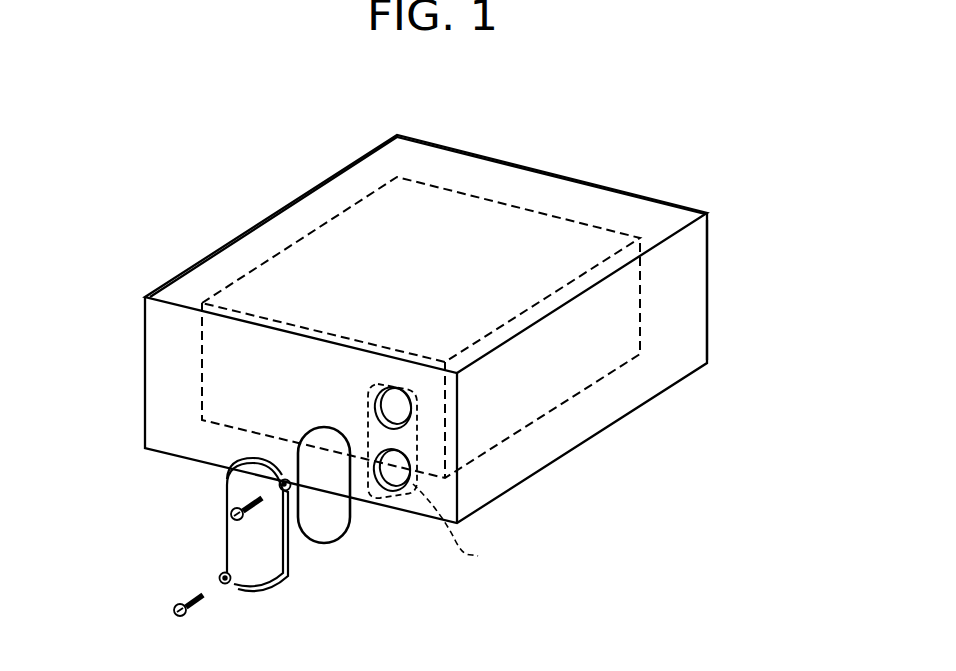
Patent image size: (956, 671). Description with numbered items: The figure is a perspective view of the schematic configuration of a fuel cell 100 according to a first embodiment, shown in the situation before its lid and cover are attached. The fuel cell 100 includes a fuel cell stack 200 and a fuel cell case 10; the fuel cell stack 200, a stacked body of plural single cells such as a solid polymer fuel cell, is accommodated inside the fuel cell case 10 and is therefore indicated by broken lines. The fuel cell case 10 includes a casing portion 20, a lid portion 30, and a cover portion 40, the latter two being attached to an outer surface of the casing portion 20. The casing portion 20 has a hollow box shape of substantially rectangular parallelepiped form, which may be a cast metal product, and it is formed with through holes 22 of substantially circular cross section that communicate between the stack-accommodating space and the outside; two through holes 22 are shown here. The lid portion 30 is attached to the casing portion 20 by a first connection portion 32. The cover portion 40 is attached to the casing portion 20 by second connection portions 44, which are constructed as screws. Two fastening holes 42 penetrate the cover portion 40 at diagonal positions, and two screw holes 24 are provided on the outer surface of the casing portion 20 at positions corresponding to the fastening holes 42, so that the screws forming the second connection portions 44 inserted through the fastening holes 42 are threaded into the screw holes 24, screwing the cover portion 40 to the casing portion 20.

The fuel cell case 10 is at (707, 174).
The casing portion 20 is at (708, 287).
The through hole 22 is at (398, 414).
The screw hole 24 is at (418, 398).
The lid portion 30 is at (327, 528).
The first connection portion 32 is at (462, 529).
The cover portion 40 is at (263, 580).
The fastening hole 42 is at (290, 488).
The second connection portion 44 is at (231, 513).
The fuel cell 100 is at (512, 108).
The fuel cell stack 200 is at (531, 210).